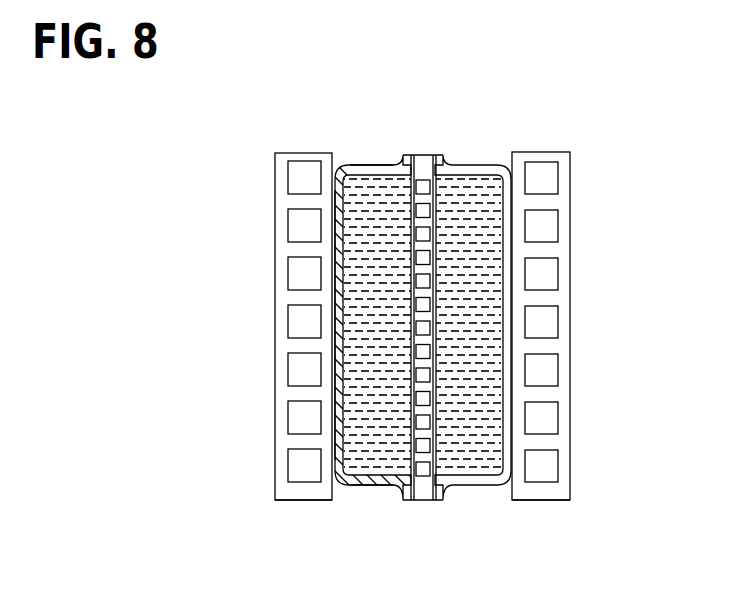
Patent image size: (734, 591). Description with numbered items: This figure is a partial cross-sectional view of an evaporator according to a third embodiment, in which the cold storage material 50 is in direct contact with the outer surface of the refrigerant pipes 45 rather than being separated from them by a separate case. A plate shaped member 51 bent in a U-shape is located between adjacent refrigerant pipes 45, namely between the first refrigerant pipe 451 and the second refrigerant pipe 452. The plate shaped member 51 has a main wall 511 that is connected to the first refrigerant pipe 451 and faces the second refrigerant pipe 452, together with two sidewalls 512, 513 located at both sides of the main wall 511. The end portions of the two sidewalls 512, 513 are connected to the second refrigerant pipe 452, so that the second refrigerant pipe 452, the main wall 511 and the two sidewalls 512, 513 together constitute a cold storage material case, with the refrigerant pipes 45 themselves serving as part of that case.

The refrigerant pipe 45 is at (303, 501).
The first refrigerant pipe 451 is at (297, 152).
The second refrigerant pipe 452 is at (426, 186).
The cold storage material 50 is at (357, 372).
The plate shaped member 51 is at (346, 323).
The main wall 511 is at (345, 326).
The sidewall 512 is at (363, 164).
The sidewall 513 is at (377, 487).